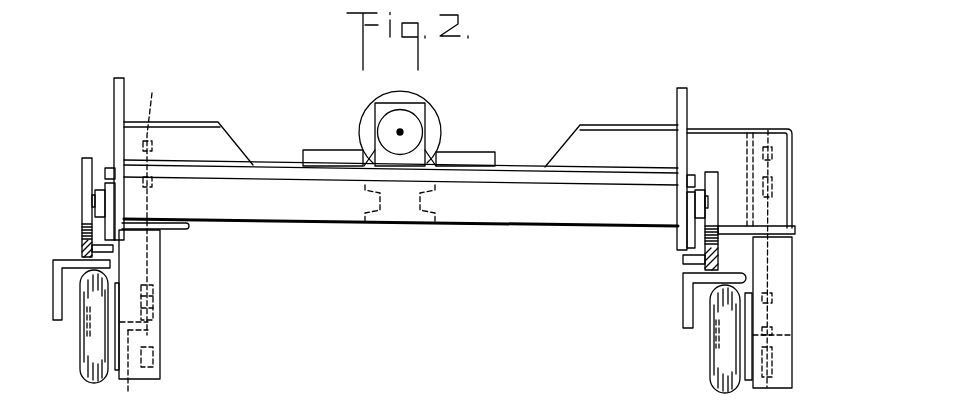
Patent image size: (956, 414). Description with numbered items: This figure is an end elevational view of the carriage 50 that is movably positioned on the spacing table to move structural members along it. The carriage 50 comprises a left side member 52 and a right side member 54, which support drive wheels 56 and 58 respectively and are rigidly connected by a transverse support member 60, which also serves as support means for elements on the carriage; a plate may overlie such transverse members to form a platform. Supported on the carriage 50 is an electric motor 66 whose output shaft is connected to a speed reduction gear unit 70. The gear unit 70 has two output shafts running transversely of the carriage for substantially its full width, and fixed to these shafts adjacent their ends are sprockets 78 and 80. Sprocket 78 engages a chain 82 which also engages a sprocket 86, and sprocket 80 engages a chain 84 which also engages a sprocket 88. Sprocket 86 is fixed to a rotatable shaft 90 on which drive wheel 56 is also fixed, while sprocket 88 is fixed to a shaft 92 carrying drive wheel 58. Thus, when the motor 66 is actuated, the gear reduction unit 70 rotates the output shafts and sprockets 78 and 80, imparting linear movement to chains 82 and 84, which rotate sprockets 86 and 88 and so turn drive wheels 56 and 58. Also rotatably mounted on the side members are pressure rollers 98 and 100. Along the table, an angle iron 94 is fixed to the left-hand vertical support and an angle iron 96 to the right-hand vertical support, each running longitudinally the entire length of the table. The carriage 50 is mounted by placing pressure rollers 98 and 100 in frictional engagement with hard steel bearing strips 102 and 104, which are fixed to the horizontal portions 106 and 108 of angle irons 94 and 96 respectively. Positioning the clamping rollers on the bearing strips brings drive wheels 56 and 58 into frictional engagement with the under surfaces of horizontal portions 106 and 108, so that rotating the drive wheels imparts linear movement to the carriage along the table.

The carriage 50 is at (533, 227).
The side member 52 is at (157, 306).
The side member 54 is at (782, 312).
The drive wheel 56 is at (88, 363).
The drive wheel 58 is at (715, 355).
The transverse support member 60 is at (297, 208).
The electric motor 66 is at (428, 115).
The speed reduction gear unit 70 is at (413, 132).
The sprocket 78 is at (153, 221).
The sprocket 80 is at (768, 130).
The chain 82 is at (150, 261).
The chain 84 is at (767, 253).
The sprocket 86 is at (155, 336).
The sprocket 88 is at (784, 326).
The rotatable shaft 90 is at (131, 372).
The shaft 92 is at (760, 271).
The angle iron 94 is at (53, 300).
The angle iron 96 is at (685, 290).
The pressure roller 98 is at (88, 158).
The pressure roller 100 is at (713, 172).
The hard steel bearing strip 102 is at (82, 245).
The hard steel bearing strip 104 is at (716, 266).
The horizontal portion 106 is at (77, 262).
The horizontal portion 108 is at (710, 283).